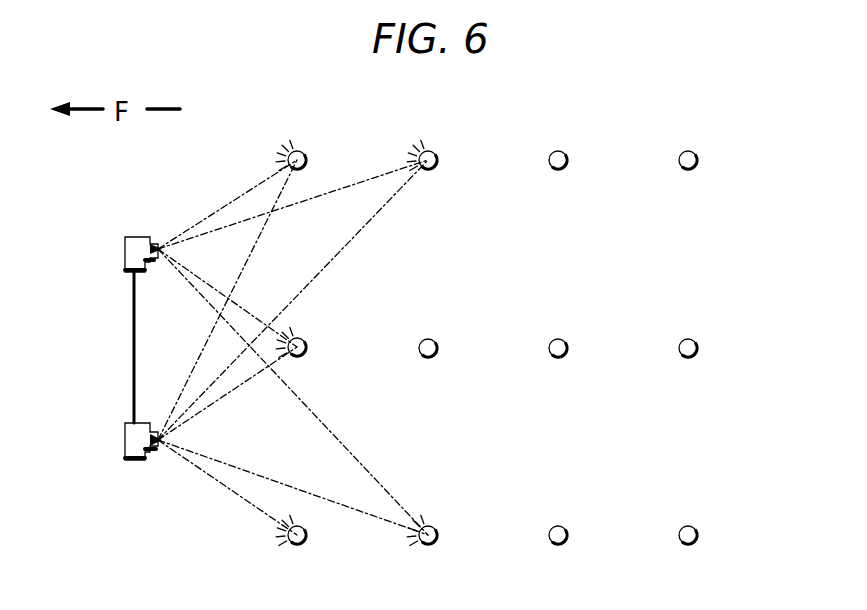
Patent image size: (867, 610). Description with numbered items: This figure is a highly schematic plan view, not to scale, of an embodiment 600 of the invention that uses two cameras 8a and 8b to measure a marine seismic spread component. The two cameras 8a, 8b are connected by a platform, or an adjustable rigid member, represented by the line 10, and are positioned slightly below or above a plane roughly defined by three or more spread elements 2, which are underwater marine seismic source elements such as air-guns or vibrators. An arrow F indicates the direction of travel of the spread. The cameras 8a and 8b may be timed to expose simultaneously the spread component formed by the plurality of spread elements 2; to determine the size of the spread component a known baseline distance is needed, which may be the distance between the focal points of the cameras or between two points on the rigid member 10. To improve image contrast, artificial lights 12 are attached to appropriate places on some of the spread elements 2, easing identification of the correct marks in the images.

The embodiment 600 is at (706, 102).
The platform or adjustable rigid member 10 is at (133, 330).
The camera 8a is at (137, 236).
The camera 8b is at (130, 462).
The lights 12 is at (425, 150).
The spread elements 2 is at (424, 546).